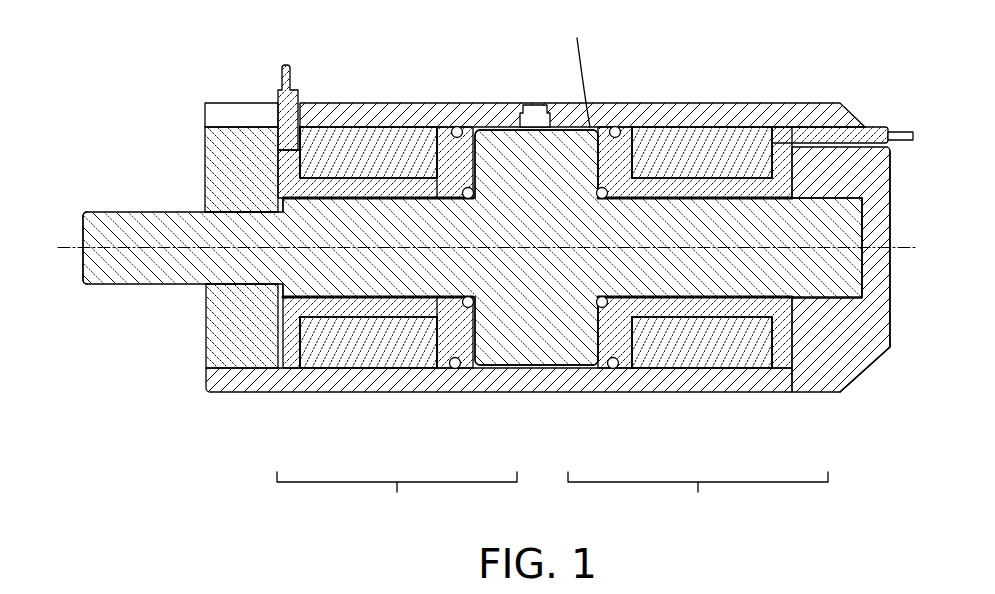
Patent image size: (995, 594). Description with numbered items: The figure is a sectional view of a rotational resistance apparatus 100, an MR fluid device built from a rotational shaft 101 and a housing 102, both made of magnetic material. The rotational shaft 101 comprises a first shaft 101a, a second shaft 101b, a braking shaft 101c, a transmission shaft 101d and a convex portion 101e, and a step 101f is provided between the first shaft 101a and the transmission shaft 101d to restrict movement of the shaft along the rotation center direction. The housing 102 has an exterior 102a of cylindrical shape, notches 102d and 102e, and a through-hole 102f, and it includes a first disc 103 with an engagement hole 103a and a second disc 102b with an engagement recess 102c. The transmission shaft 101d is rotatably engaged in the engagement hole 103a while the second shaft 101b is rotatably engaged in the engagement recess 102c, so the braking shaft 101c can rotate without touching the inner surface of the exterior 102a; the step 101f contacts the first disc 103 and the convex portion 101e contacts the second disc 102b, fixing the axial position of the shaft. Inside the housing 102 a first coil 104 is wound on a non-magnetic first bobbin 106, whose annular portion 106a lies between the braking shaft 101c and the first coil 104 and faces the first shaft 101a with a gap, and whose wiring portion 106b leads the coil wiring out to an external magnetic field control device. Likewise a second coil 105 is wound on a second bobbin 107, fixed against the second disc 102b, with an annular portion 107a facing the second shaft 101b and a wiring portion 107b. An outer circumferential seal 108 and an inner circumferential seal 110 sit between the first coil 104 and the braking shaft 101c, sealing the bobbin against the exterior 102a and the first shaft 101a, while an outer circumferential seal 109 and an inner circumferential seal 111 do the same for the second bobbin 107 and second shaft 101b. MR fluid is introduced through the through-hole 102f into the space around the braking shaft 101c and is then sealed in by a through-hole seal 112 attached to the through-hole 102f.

The rotational resistance apparatus 100 is at (503, 269).
The rotational shaft 101 is at (495, 243).
The first shaft 101a is at (381, 197).
The second shaft 101b is at (710, 198).
The braking shaft 101c is at (492, 130).
The transmission shaft 101d is at (100, 212).
The convex portion 101e is at (863, 260).
The step 101f is at (278, 291).
The housing 102 is at (524, 200).
The exterior 102a is at (332, 100).
The second disc 102b is at (827, 170).
The engagement recess 102c is at (836, 196).
The notch 102d is at (205, 105).
The notch 102e is at (780, 125).
The through-hole 102f is at (504, 71).
The first disc 103 is at (209, 233).
The engagement hole 103a is at (225, 212).
The first coil 104 is at (310, 343).
The second coil 105 is at (748, 347).
The first bobbin 106 is at (347, 242).
The annular portion 106a is at (445, 330).
The wiring portion 106b is at (287, 90).
The second bobbin 107 is at (780, 240).
The annular portion 107a is at (620, 332).
The wiring portion 107b is at (905, 132).
The outer circumferential seal 108 is at (455, 369).
The outer circumferential seal 109 is at (613, 369).
The inner circumferential seal 110 is at (468, 308).
The inner circumferential seal 111 is at (602, 308).
The through-hole seal 112 is at (538, 107).